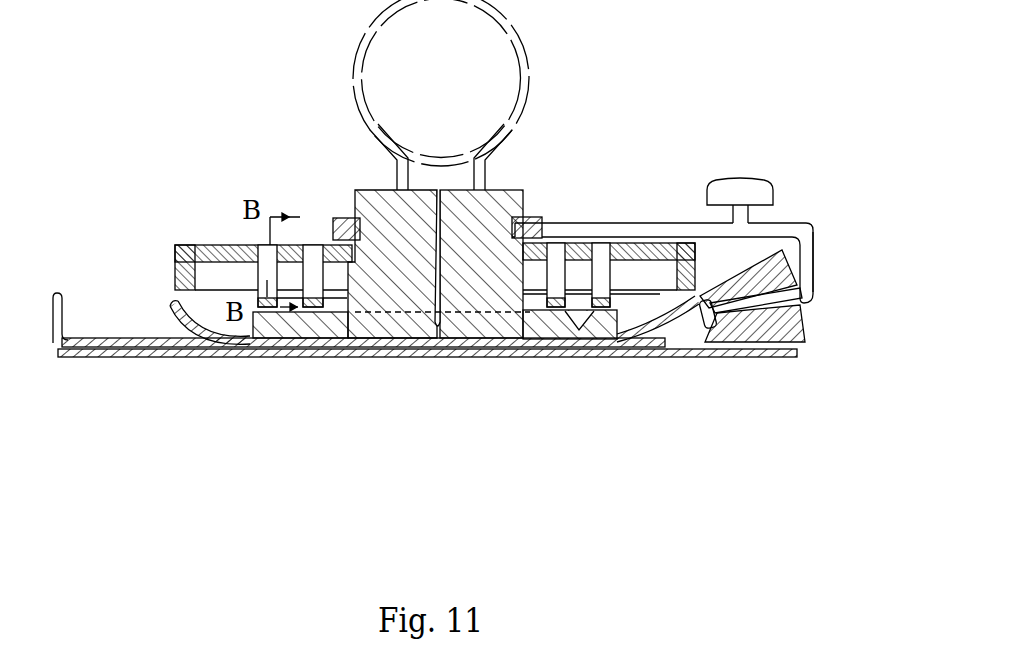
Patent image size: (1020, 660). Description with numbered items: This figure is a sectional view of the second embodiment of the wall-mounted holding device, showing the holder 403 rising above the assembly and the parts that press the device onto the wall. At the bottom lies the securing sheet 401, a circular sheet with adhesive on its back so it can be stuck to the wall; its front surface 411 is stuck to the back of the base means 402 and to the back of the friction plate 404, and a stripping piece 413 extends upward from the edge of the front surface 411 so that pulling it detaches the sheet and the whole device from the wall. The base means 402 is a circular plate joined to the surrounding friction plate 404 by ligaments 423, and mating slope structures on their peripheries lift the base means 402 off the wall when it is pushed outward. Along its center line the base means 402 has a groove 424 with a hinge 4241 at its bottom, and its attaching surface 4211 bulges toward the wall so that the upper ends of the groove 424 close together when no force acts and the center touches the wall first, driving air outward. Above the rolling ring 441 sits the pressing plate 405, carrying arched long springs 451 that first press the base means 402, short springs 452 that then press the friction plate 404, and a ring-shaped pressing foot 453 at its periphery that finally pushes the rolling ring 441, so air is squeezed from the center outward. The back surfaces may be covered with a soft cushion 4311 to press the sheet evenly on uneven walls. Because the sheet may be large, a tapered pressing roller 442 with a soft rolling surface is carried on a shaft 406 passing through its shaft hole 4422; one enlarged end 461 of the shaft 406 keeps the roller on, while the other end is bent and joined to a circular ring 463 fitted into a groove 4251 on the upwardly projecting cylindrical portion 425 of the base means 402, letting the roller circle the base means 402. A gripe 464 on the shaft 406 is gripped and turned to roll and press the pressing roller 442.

The securing sheet 401 is at (60, 350).
The base means 402 is at (463, 312).
The holder 403 is at (524, 50).
The friction plate 404 is at (587, 347).
The pressing plate 405 is at (675, 243).
The shaft 406 is at (808, 242).
The front surface 411 is at (670, 347).
The stripping piece 413 is at (62, 320).
The ligaments 423 is at (570, 333).
The groove 424 is at (455, 274).
The upwardly projecting cylindrical portion 425 is at (398, 240).
The rolling ring 441 is at (652, 310).
The pressing roller 442 is at (784, 250).
The long springs 451 is at (556, 243).
The short springs 452 is at (608, 243).
The pressing foot 453 is at (692, 243).
The end of the shaft 461 is at (698, 333).
The circular ring 463 is at (538, 216).
The gripe 464 is at (737, 187).
The attaching surface 4211 is at (482, 358).
The hinge 4241 is at (435, 343).
The groove 4251 is at (336, 215).
The soft cushion 4311 is at (227, 352).
The shaft hole 4422 is at (753, 344).